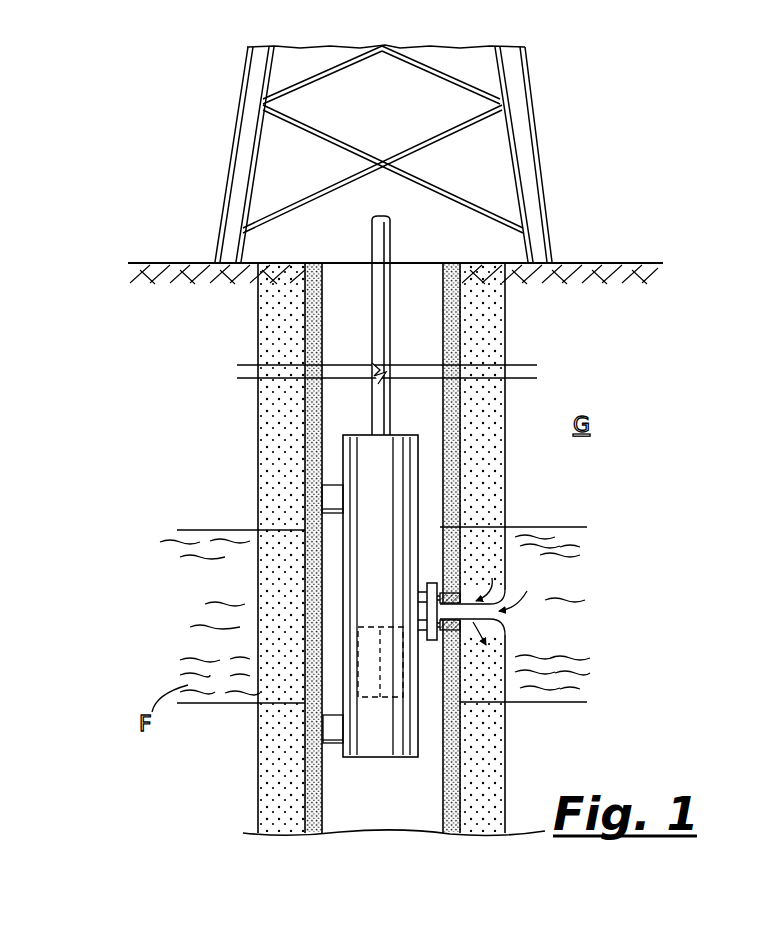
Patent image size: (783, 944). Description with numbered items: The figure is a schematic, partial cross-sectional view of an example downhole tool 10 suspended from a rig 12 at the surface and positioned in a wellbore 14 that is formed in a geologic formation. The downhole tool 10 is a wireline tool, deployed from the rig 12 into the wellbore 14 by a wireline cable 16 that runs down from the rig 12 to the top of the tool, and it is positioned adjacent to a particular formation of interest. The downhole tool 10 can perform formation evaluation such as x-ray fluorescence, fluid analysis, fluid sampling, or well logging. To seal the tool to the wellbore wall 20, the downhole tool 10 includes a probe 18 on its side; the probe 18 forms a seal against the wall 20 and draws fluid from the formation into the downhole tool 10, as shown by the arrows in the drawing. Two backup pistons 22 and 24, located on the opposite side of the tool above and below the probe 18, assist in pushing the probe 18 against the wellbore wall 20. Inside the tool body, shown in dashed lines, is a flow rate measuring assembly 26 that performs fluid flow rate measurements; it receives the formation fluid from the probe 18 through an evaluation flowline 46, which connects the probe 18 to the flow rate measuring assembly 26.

The downhole tool 10 is at (426, 524).
The rig 12 is at (535, 152).
The wellbore 14 is at (446, 276).
The wireline cable 16 is at (390, 234).
The probe 18 is at (442, 596).
The wellbore wall 20 is at (463, 677).
The backup piston 22 is at (326, 482).
The backup piston 24 is at (331, 743).
The flow rate measuring assembly 26 is at (384, 697).
The evaluation flowline 46 is at (380, 627).